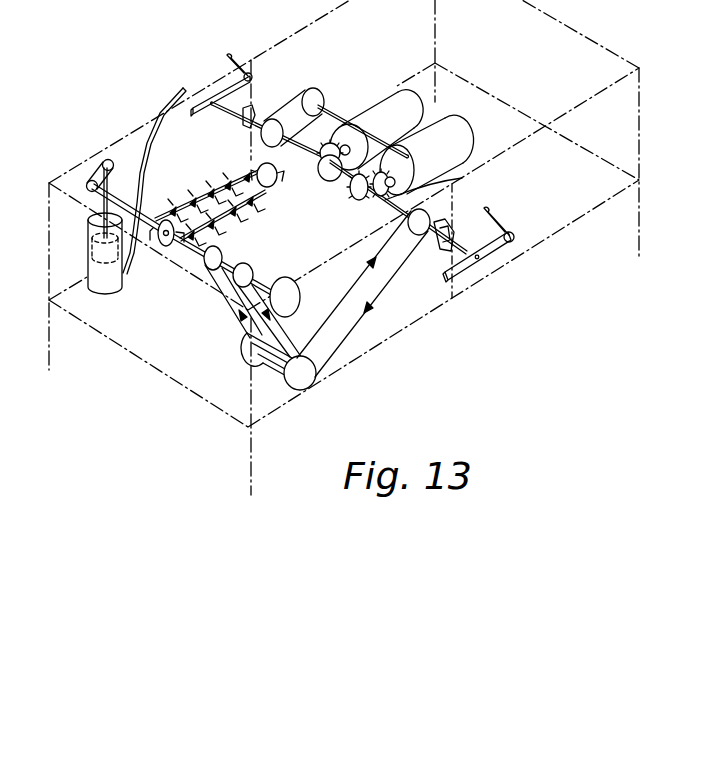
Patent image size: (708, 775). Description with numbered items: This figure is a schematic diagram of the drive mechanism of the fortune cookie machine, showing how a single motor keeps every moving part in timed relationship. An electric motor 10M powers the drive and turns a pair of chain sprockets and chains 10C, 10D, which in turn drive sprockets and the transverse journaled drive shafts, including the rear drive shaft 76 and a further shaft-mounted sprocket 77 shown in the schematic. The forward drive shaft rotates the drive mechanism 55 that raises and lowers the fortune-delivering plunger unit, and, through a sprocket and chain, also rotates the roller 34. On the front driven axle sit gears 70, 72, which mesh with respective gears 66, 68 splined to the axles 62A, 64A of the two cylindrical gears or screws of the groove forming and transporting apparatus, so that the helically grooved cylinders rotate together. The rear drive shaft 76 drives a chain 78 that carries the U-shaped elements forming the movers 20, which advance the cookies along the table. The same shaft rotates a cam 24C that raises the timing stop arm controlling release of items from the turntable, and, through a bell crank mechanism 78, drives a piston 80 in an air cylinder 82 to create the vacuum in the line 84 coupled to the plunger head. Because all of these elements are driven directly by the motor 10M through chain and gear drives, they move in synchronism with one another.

The chain sprocket and chain 10C is at (224, 305).
The chain sprocket and chain 10D is at (363, 323).
The electric motor 10M is at (256, 355).
The movers 20 is at (190, 201).
The cam 24C is at (300, 296).
The roller 34 is at (321, 97).
The drive mechanism 55 is at (228, 78).
The axle 62A is at (389, 107).
The axle 64A is at (456, 137).
The gear 66 is at (462, 178).
The gear 68 is at (328, 142).
The gear 70 is at (356, 200).
The gear 72 is at (326, 182).
The rear drive shaft 76 is at (178, 262).
The pulley 77 is at (425, 240).
The chain / bell crank mechanism 78 is at (111, 161).
The piston 80 is at (64, 231).
The air cylinder 82 is at (62, 267).
The vacuum line 84 is at (171, 103).